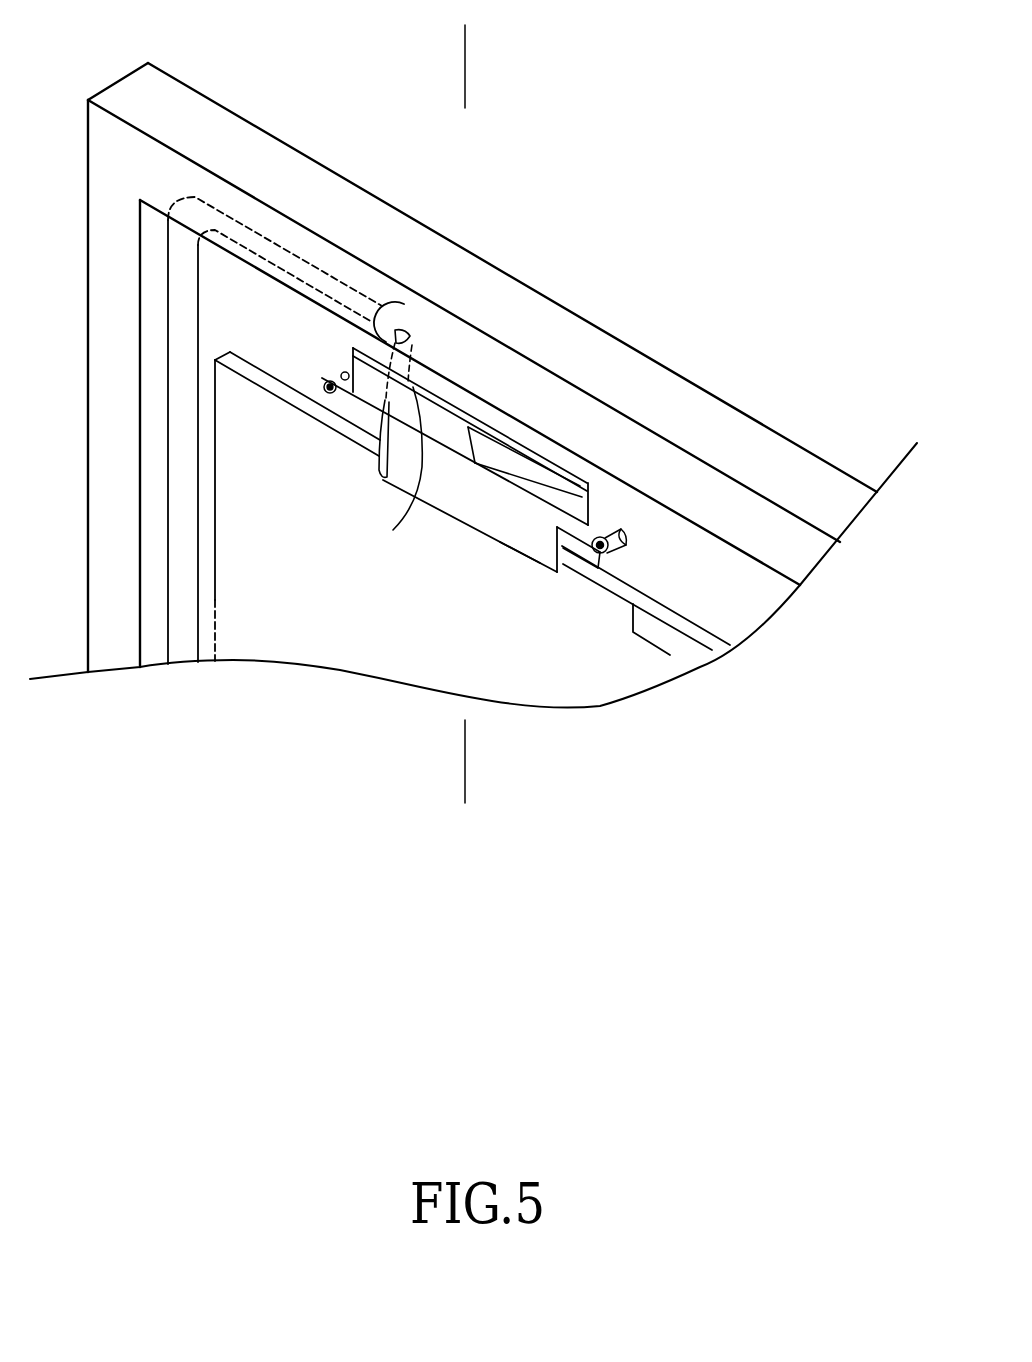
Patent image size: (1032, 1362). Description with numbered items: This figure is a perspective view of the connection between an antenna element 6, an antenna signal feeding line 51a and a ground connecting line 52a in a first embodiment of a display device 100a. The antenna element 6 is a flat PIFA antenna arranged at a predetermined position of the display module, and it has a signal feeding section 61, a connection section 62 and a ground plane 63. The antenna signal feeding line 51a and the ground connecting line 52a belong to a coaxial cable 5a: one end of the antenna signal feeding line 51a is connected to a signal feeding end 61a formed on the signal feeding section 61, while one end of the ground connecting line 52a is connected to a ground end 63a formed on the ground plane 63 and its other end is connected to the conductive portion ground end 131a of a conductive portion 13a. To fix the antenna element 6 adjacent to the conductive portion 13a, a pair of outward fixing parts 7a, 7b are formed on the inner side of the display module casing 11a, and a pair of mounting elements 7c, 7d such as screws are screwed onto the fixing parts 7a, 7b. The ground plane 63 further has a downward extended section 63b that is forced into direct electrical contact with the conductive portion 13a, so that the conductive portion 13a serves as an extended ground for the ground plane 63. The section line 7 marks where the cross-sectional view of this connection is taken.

The display module casing 11a is at (177, 100).
The coaxial cable 5a is at (318, 268).
The ground connecting line 52a is at (392, 303).
The antenna signal feeding line 51a is at (420, 362).
The signal feeding section 61 is at (533, 467).
The signal feeding end 61a is at (392, 479).
The connection section 62 is at (470, 428).
The ground plane 63 is at (520, 512).
The ground end 63a is at (382, 478).
The downward extended section 63b is at (535, 560).
The antenna element 6 is at (638, 478).
The section line 7 is at (465, 68).
The fixing part 7a is at (620, 538).
The fixing part 7b is at (343, 375).
The mounting element 7c is at (588, 567).
The mounting element 7d is at (332, 390).
The conductive portion 13a is at (633, 673).
The conductive portion ground end 131a is at (663, 633).
The display apparatus 100a is at (738, 190).